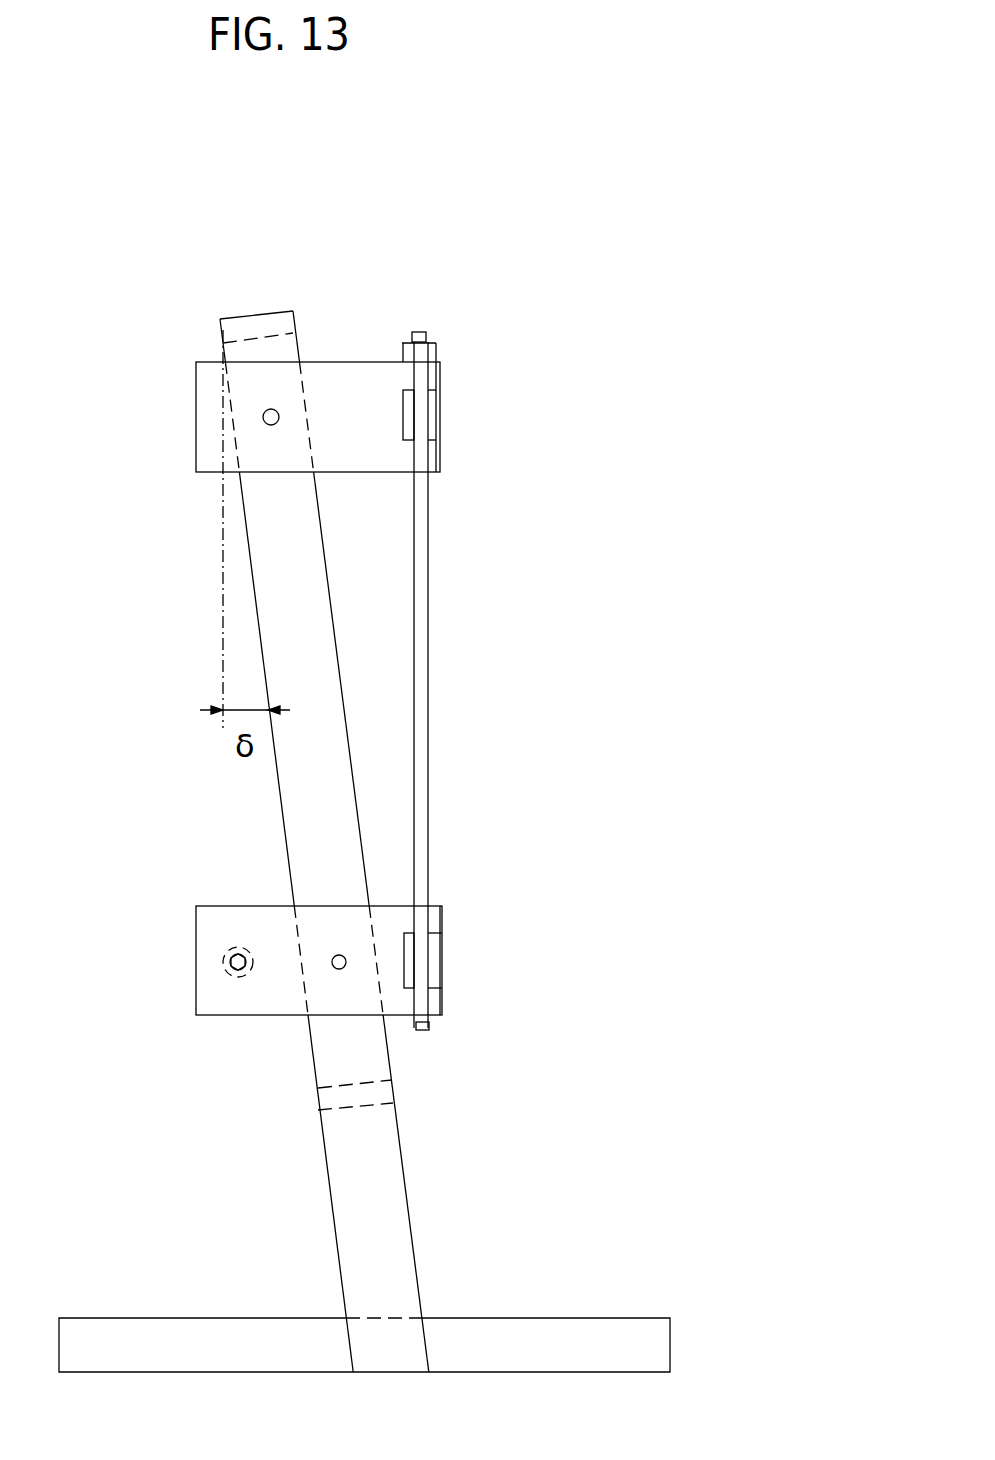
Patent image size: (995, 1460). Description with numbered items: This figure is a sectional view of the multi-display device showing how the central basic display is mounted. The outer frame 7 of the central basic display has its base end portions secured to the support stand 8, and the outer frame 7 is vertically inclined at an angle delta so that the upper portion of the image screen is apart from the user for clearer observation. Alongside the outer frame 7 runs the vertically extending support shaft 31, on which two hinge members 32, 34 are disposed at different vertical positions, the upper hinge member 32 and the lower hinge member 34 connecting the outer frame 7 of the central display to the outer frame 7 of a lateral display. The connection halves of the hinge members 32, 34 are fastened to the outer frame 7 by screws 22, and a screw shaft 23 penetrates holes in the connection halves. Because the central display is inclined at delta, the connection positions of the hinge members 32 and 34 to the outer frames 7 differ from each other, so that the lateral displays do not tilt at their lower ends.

The outer frame 7 is at (357, 1180).
The support stand 8 is at (585, 1347).
The screw 22 is at (339, 962).
The screw shaft 23 is at (238, 962).
The support shaft 31 is at (422, 623).
The hinge member 32 is at (360, 383).
The hinge member 34 is at (393, 922).